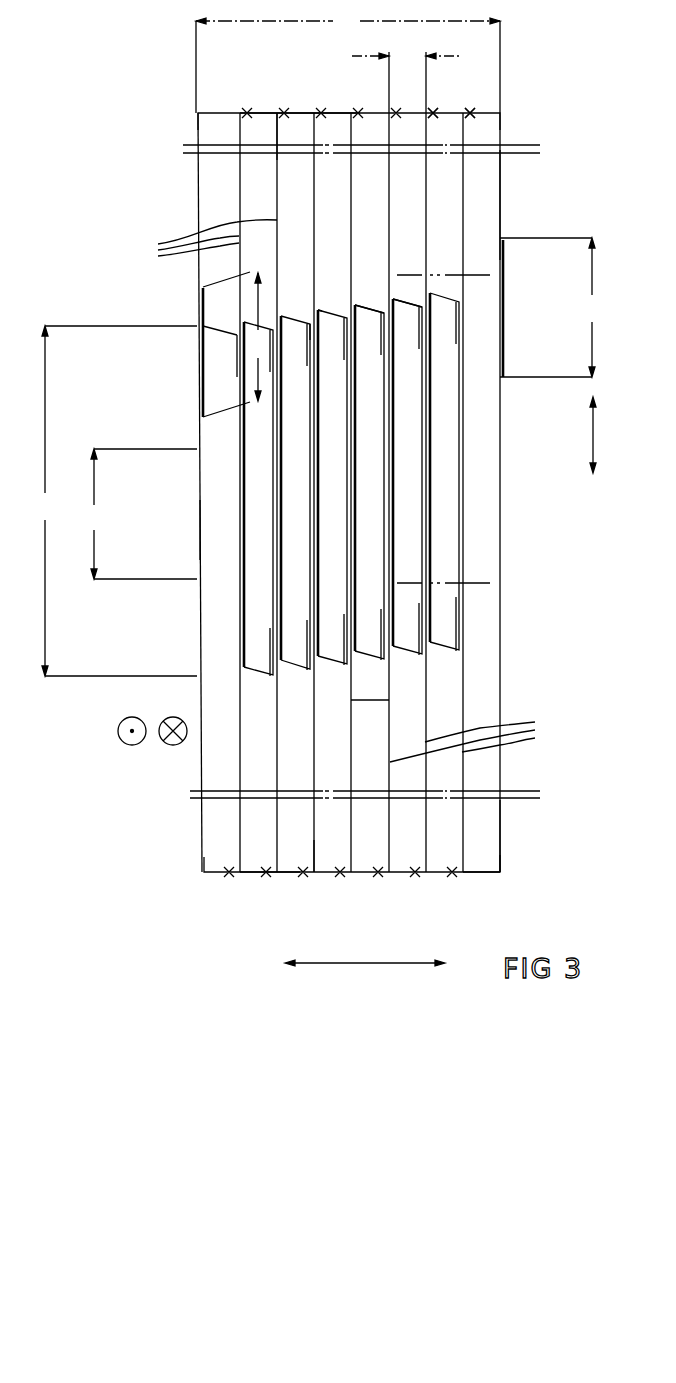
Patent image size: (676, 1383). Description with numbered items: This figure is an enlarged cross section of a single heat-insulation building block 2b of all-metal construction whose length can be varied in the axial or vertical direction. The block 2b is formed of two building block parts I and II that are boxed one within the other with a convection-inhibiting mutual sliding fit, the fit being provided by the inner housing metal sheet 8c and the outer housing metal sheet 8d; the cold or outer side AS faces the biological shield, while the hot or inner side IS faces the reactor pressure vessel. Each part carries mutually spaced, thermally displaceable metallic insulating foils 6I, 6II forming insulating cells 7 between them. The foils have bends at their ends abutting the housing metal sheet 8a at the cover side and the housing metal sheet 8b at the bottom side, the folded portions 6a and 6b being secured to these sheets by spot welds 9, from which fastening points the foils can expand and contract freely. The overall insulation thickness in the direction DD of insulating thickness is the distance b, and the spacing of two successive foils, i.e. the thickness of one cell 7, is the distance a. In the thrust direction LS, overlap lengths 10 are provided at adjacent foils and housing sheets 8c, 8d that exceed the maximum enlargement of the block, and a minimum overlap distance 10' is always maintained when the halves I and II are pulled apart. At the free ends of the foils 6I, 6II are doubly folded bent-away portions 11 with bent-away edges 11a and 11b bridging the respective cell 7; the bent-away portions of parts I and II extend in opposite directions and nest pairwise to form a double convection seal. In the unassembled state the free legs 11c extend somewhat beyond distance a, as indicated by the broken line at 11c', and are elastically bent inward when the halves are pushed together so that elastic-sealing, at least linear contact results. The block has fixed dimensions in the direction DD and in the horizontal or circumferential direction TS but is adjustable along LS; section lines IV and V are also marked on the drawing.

The bent-away portions 11 is at (350, 318).
The bent-away edge 11a is at (385, 325).
The bent-away edge 11b is at (396, 304).
The free leg 11c is at (333, 355).
The free leg in unassembled condition 11c' is at (299, 368).
The housing metal sheet at cover side 8a is at (300, 113).
The housing metal sheet at bottom side 8b is at (275, 875).
The inner housing metal sheet 8c is at (198, 527).
The outer housing metal sheet 8d is at (503, 284).
The bent portion of insulating foil 6a is at (288, 117).
The bent portion of insulating foil 6b is at (333, 867).
The insulating foils of building block part I 6I is at (205, 243).
The insulating foils of building block part II 6II is at (468, 742).
The spot welds 9 is at (470, 115).
The insulating cells 7 is at (380, 716).
The building block 2b is at (500, 840).
The overlap length 10 is at (319, 457).
The minimum overlap distance 10' is at (140, 514).
The distance a is at (406, 80).
The distance b is at (348, 62).
The building block part I is at (502, 204).
The building block part II is at (470, 874).
The section line IV is at (480, 273).
The section line V is at (480, 581).
The hot or inner side IS is at (150, 410).
The cold or outer side AS is at (542, 411).
The thrust or sliding direction LS is at (605, 435).
The horizontal or circumferential direction TS is at (152, 718).
The direction of insulating thickness DD is at (365, 976).